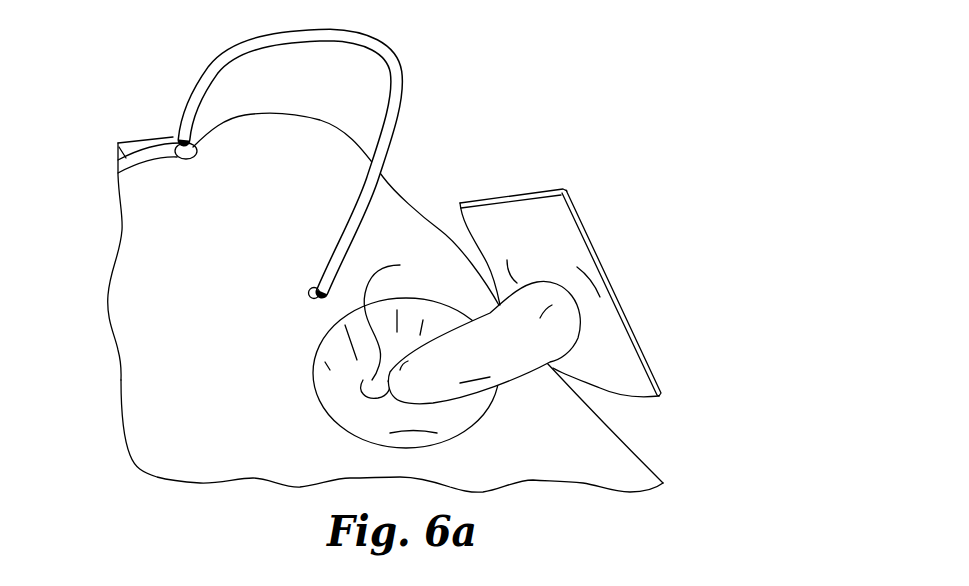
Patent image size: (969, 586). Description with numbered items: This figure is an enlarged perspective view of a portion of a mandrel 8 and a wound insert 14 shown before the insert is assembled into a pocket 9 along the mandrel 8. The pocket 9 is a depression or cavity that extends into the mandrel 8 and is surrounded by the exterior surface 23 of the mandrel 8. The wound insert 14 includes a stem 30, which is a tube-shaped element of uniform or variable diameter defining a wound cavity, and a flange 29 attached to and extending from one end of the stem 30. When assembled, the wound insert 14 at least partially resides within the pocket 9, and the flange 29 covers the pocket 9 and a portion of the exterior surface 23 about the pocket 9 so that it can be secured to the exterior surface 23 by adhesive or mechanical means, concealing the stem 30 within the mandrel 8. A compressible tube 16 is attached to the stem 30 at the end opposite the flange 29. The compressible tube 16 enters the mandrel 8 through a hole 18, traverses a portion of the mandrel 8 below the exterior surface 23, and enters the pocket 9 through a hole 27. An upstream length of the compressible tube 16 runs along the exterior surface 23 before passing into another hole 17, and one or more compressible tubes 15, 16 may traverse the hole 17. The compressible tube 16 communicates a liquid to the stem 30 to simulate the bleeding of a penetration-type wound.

The mandrel 8 is at (177, 360).
The pocket 9 is at (380, 428).
The wound insert 14 is at (676, 380).
The compressible tube 15 is at (118, 152).
The compressible tube 16 is at (400, 68).
The hole 17 is at (195, 152).
The hole 18 is at (307, 290).
The exterior surface 23 is at (177, 268).
The hole 27 is at (362, 382).
The flange 29 is at (630, 323).
The stem 30 is at (503, 347).